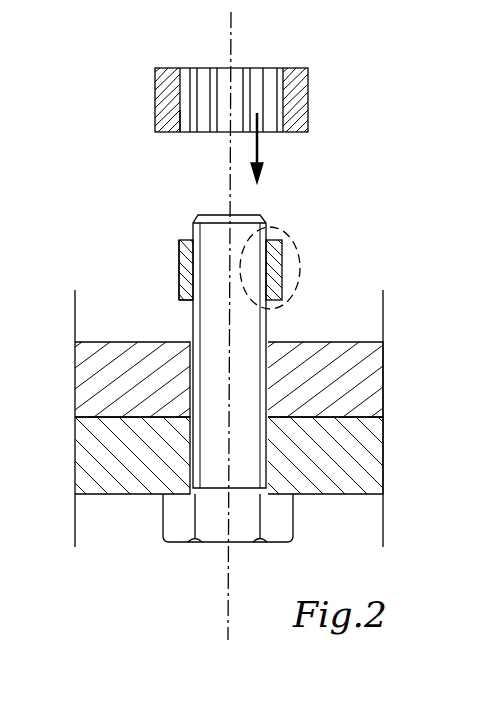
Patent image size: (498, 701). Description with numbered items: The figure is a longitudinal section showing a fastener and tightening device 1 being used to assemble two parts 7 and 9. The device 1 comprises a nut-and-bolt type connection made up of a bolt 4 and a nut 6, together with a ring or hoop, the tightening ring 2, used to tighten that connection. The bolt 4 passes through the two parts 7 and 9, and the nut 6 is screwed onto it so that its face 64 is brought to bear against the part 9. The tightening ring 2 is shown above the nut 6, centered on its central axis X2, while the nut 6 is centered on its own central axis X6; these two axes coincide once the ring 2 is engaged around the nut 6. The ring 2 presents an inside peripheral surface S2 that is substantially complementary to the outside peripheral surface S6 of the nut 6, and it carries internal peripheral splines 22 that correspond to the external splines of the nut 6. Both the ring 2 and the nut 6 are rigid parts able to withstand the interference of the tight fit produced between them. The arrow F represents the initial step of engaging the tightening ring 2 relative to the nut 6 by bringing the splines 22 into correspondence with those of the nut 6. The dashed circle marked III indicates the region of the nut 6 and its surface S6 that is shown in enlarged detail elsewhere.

The fastener and tightening device 1 is at (357, 112).
The tightening ring 2 is at (172, 90).
The internal peripheral splines 22 is at (227, 78).
The bolt 4 is at (270, 325).
The nut 6 is at (169, 269).
The face 64 is at (158, 316).
The part 9 is at (372, 395).
The part 7 is at (372, 470).
The inside peripheral surface S2 is at (178, 112).
The outside peripheral surface S6 is at (178, 252).
The detail view III is at (285, 228).
The central axis X2 is at (243, 168).
The central axis X6 is at (240, 485).
The arrow F is at (264, 148).